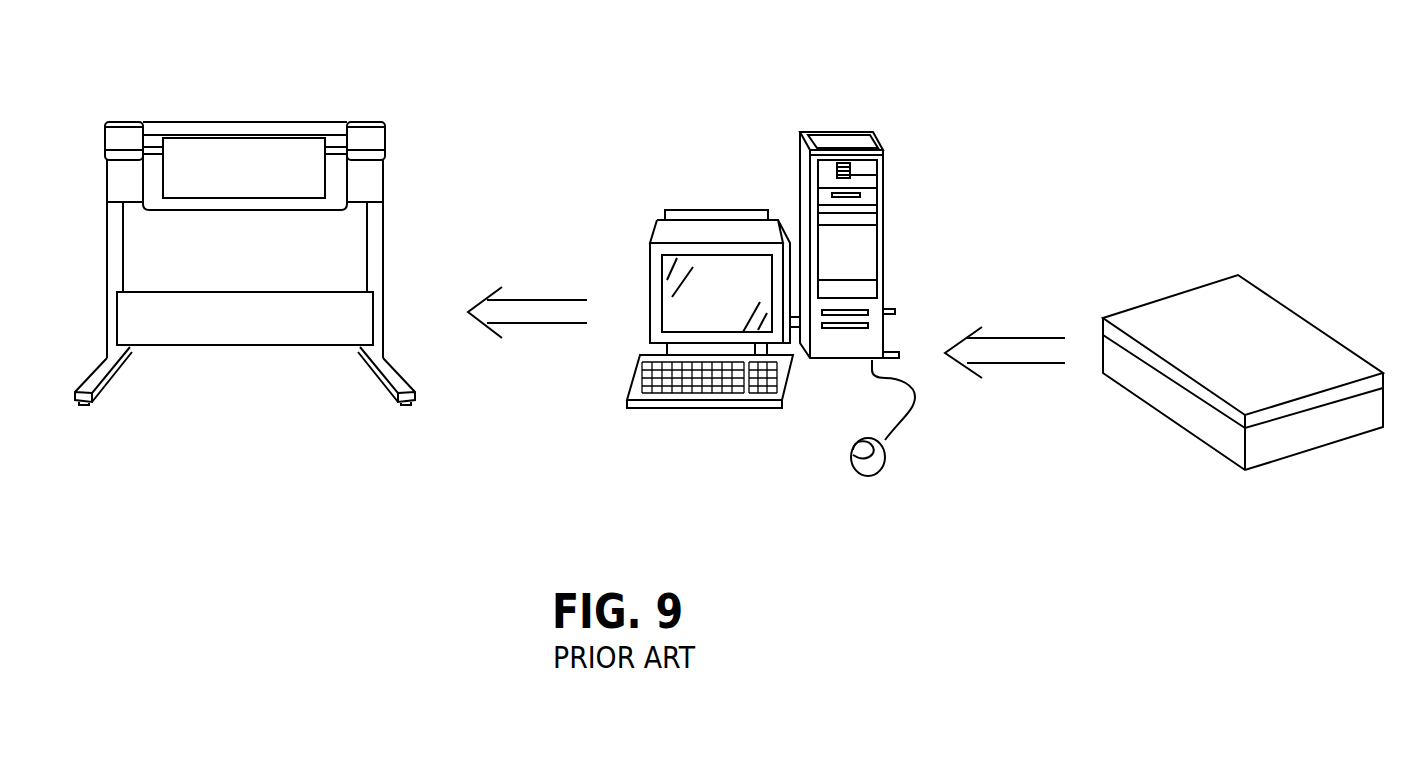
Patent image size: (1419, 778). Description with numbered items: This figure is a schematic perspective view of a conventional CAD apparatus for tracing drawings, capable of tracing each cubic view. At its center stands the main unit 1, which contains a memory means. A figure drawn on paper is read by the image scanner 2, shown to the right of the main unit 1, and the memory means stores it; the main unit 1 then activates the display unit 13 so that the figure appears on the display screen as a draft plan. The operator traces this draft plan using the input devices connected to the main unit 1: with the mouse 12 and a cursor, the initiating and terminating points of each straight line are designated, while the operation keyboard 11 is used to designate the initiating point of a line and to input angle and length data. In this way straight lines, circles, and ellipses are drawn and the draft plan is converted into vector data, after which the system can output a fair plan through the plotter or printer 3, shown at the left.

The main unit 1 is at (885, 233).
The image scanner 2 is at (1277, 332).
The plotter or printer 3 is at (218, 122).
The operation keyboard 11 is at (653, 390).
The mouse 12 is at (872, 467).
The display unit 13 is at (712, 263).